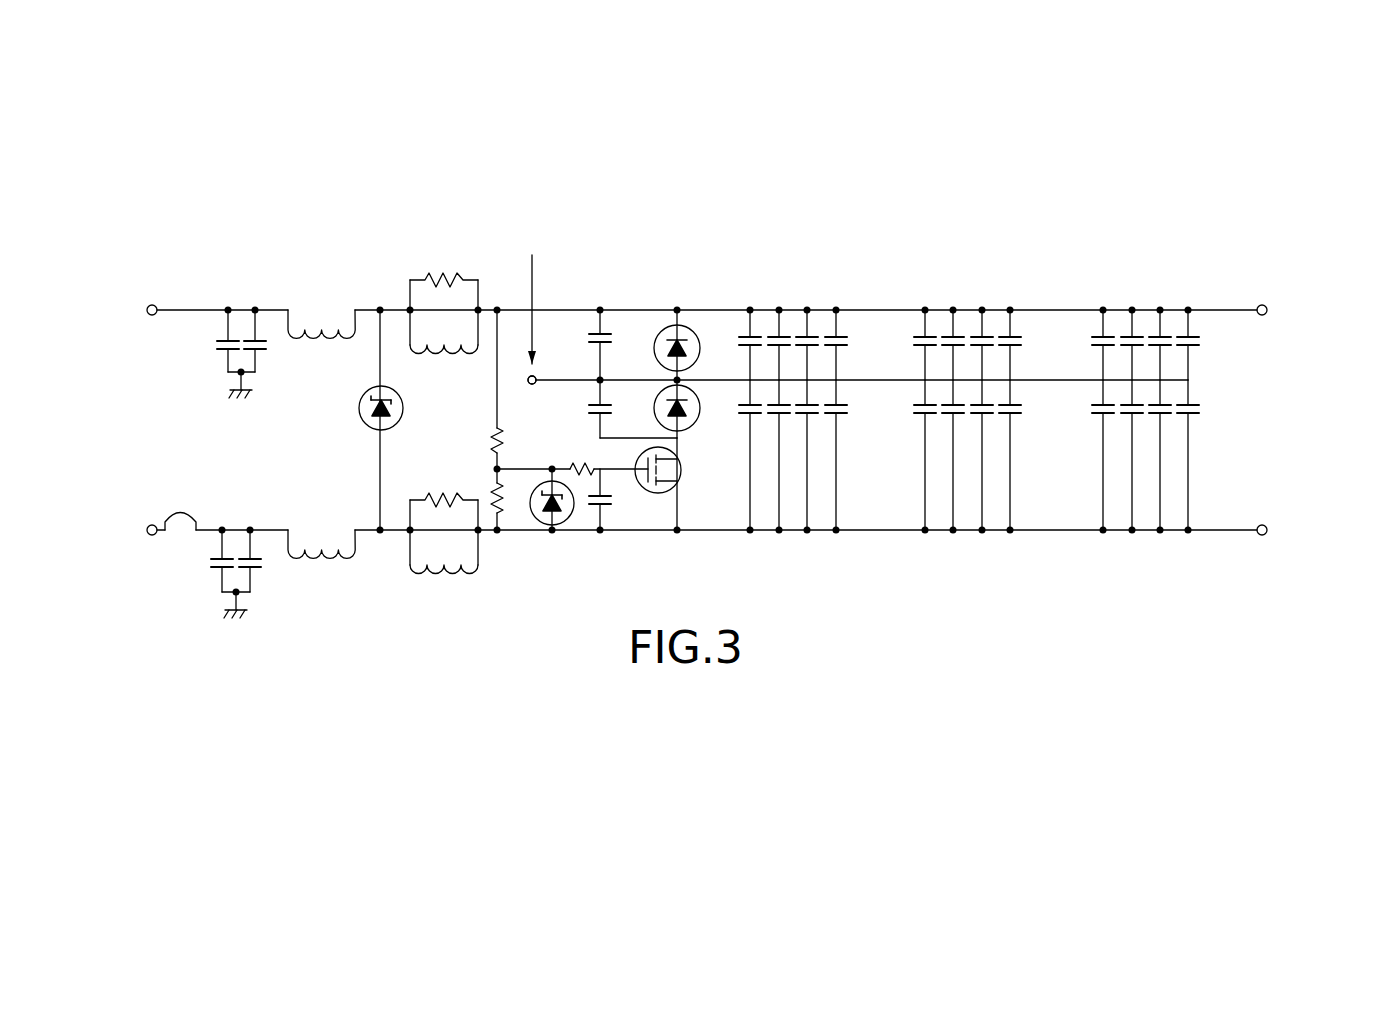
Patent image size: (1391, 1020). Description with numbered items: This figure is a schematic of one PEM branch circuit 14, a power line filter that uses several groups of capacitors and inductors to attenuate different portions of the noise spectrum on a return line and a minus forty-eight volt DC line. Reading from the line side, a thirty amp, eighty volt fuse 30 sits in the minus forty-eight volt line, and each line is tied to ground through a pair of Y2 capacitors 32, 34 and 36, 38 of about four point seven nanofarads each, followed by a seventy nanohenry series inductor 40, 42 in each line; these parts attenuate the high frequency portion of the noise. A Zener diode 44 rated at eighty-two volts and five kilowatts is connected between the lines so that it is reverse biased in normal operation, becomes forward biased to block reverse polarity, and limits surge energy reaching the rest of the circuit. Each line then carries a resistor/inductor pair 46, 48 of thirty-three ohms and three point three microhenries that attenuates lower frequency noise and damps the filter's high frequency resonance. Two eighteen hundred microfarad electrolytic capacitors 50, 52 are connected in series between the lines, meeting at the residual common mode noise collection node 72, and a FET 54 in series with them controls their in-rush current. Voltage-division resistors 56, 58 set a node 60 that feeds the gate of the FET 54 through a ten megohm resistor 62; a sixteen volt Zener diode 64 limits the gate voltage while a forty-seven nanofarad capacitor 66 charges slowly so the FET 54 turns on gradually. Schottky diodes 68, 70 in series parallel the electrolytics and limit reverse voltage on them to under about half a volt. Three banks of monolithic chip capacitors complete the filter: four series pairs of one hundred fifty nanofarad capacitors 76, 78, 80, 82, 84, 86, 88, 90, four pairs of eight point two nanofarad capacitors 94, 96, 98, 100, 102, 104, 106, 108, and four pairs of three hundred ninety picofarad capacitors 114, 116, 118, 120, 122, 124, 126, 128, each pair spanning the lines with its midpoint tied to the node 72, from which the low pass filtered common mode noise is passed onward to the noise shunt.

The PEM branch circuit 14 is at (1040, 186).
The fuse 30 is at (204, 513).
The Y2 capacitor 32 is at (217, 353).
The Y2 capacitor 34 is at (264, 355).
The Y2 capacitor 36 is at (215, 574).
The Y2 capacitor 38 is at (259, 575).
The inductor 40 is at (319, 297).
The inductor 42 is at (292, 514).
The Zener diode 44 is at (357, 423).
The resistor/inductor pair 46 is at (440, 274).
The resistor/inductor pair 48 is at (438, 574).
The electrolytic capacitor 50 is at (608, 328).
The electrolytic capacitor 52 is at (619, 396).
The field effect transistor 54 is at (688, 472).
The voltage-division resistor 56 is at (490, 427).
The voltage-division resistor 58 is at (491, 520).
The node 60 is at (503, 467).
The resistor 62 is at (585, 488).
The Zener diode 64 is at (530, 522).
The capacitor 66 is at (612, 523).
The Schottky diode 68 is at (702, 328).
The Schottky diode 70 is at (709, 393).
The residual common mode noise collection node 72 is at (524, 380).
The chip capacitor 76 is at (760, 328).
The chip capacitor 78 is at (744, 424).
The chip capacitor 80 is at (789, 328).
The chip capacitor 82 is at (775, 424).
The chip capacitor 84 is at (818, 328).
The chip capacitor 86 is at (803, 424).
The chip capacitor 88 is at (848, 328).
The chip capacitor 90 is at (832, 424).
The chip capacitor 94 is at (907, 328).
The chip capacitor 96 is at (918, 422).
The chip capacitor 98 is at (937, 328).
The chip capacitor 100 is at (946, 424).
The chip capacitor 102 is at (967, 328).
The chip capacitor 104 is at (976, 424).
The chip capacitor 106 is at (997, 328).
The chip capacitor 108 is at (1004, 424).
The chip capacitor 114 is at (1085, 323).
The chip capacitor 116 is at (1098, 424).
The chip capacitor 118 is at (1115, 323).
The chip capacitor 120 is at (1125, 424).
The chip capacitor 122 is at (1145, 323).
The chip capacitor 124 is at (1154, 424).
The chip capacitor 126 is at (1174, 323).
The chip capacitor 128 is at (1183, 424).